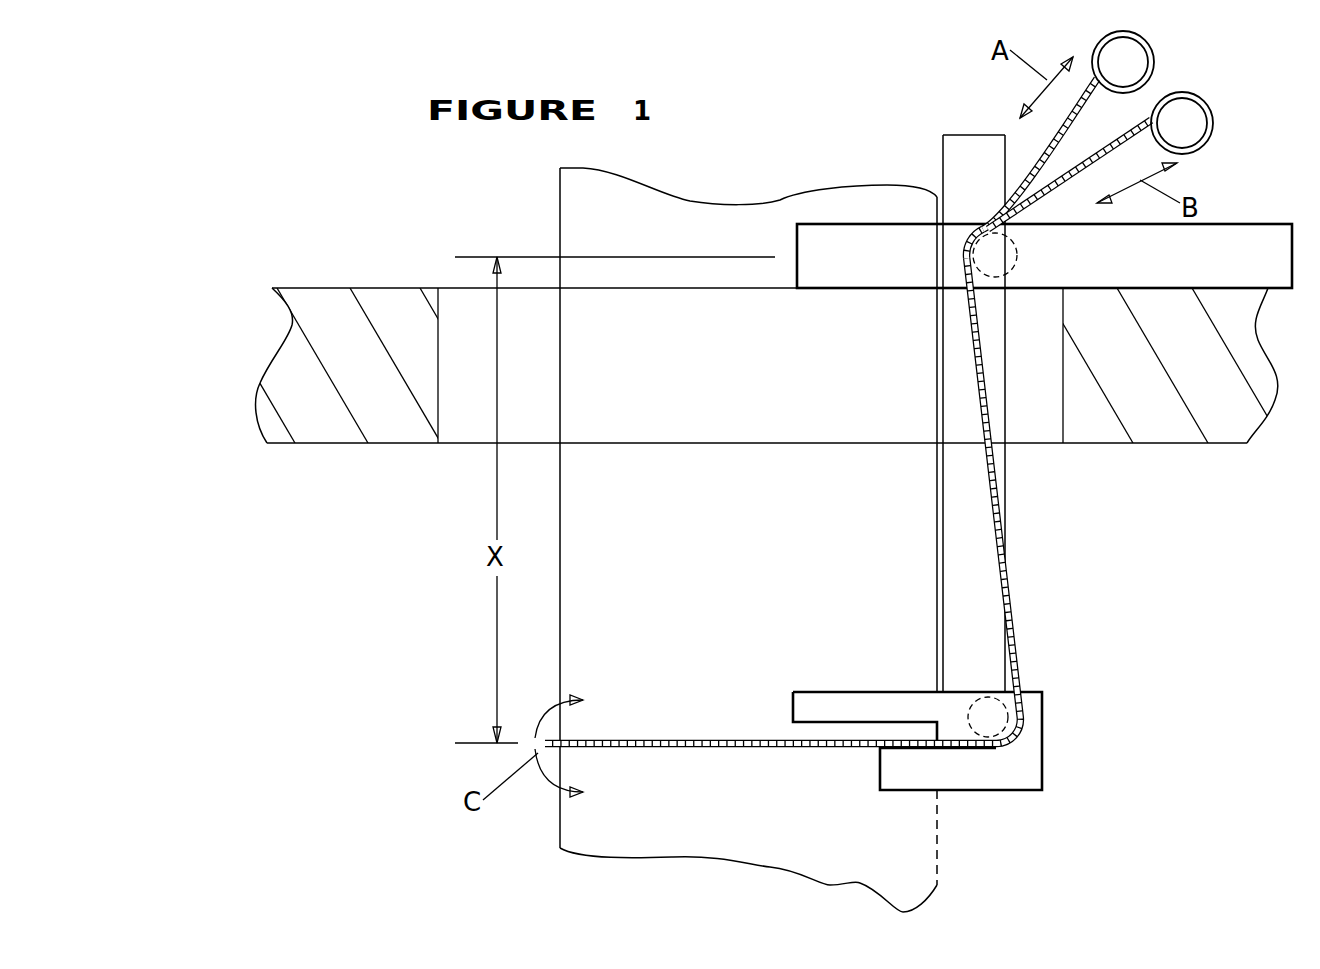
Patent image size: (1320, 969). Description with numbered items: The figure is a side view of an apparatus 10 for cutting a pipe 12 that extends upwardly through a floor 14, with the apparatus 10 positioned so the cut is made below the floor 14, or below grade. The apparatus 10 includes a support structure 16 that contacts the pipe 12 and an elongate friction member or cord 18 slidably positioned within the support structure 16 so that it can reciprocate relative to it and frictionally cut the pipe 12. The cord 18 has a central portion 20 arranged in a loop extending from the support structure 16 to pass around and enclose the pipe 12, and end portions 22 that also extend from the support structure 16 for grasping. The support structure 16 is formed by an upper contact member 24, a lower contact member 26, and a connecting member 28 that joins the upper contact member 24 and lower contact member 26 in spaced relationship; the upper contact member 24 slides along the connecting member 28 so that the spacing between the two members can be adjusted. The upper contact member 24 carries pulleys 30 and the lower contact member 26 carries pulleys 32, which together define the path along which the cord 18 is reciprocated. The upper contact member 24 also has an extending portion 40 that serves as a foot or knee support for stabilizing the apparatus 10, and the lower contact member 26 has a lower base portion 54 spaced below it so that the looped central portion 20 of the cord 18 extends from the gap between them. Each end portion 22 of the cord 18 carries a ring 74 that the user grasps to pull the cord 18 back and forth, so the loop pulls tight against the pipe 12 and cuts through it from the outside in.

The apparatus 10 is at (1048, 560).
The pipe 12 is at (697, 563).
The floor 14 is at (318, 423).
The support structure 16 is at (798, 222).
The cord 18 is at (761, 486).
The central portion 20 is at (543, 733).
The end portions 22 is at (1040, 147).
The upper contact member 24 is at (858, 278).
The lower contact member 26 is at (833, 721).
The connecting member 28 is at (963, 626).
The pulleys 30 is at (1008, 272).
The pulleys 32 is at (993, 722).
The extending portion 40 is at (1243, 280).
The lower base portion 54 is at (967, 786).
The rings 74 is at (1155, 52).